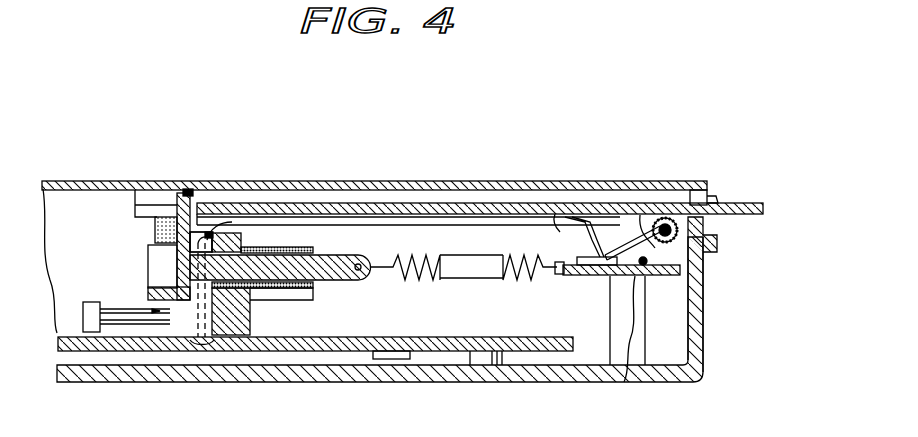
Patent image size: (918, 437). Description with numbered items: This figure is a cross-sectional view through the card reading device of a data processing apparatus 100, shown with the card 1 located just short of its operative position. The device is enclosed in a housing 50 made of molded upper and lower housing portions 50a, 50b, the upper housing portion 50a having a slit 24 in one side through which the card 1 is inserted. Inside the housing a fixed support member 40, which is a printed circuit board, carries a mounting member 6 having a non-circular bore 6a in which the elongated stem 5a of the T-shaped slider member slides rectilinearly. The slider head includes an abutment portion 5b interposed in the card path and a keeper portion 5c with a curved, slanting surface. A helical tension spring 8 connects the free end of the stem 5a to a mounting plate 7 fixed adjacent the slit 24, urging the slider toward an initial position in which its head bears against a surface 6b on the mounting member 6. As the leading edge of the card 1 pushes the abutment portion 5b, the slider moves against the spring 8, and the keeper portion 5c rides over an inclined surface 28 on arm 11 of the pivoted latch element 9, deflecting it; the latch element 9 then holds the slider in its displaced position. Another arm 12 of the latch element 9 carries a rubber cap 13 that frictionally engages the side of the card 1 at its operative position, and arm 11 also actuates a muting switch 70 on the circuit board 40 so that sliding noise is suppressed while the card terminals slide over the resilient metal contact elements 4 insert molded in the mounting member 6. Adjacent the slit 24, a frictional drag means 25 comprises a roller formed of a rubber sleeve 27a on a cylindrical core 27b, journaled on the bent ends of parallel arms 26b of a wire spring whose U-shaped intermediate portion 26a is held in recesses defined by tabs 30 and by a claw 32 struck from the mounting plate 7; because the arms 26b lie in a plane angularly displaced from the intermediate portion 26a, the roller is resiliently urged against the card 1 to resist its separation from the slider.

The card 1 is at (408, 203).
The resilient metal contact elements 4 is at (233, 207).
The elongated stem 5a is at (338, 282).
The abutment portion 5b is at (180, 197).
The keeper portion 5c is at (150, 280).
The mounting member 6 is at (252, 312).
The bore 6a is at (285, 245).
The surface 6b is at (218, 212).
The mounting plate 7 is at (590, 276).
The helical tension spring 8 is at (426, 280).
The latch element 9 is at (142, 268).
The arm 11 is at (155, 350).
The arm 12 is at (157, 258).
The rubber cap 13 is at (163, 203).
The slit 24 is at (715, 243).
The frictional drag means 25 is at (614, 238).
The U-shaped intermediate portion 26a is at (547, 208).
The parallel arms 26b is at (640, 212).
The rubber sleeve 27a is at (672, 218).
The cylindrical core 27b is at (712, 197).
The inclined surface 28 is at (188, 350).
The tabs 30 is at (560, 210).
The claw 32 is at (624, 382).
The fixed support member 40 is at (517, 337).
The housing 50 is at (778, 317).
The upper housing portion 50a is at (697, 323).
The lower housing portion 50b is at (697, 367).
The muting switch 70 is at (112, 350).
The data processing apparatus 100 is at (486, 118).